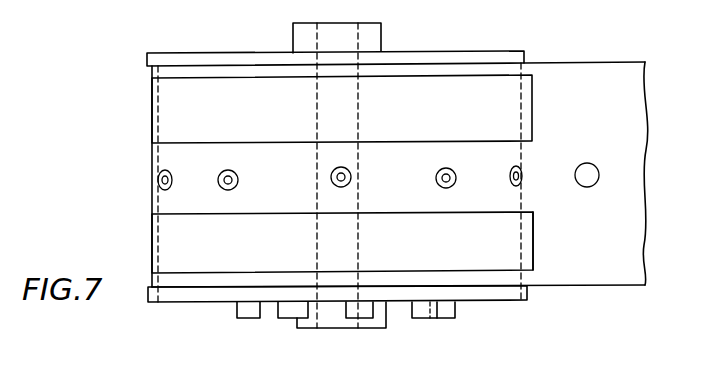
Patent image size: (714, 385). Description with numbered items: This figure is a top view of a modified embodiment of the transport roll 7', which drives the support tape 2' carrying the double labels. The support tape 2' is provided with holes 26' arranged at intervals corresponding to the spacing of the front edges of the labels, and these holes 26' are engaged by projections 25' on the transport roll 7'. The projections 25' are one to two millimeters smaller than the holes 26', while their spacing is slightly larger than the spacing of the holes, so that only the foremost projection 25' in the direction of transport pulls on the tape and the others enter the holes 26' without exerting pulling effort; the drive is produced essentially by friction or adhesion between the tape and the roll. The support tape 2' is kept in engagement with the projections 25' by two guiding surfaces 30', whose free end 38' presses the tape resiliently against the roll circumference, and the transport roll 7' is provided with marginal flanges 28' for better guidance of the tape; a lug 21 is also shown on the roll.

The support tape 2' is at (400, 175).
The transport roll 7' is at (366, 334).
The lug 21 is at (248, 318).
The projections 25' is at (393, 144).
The holes 26' is at (378, 193).
The marginal flanges 28' is at (337, 180).
The guiding surfaces 30' is at (318, 174).
The free end 38' is at (557, 241).